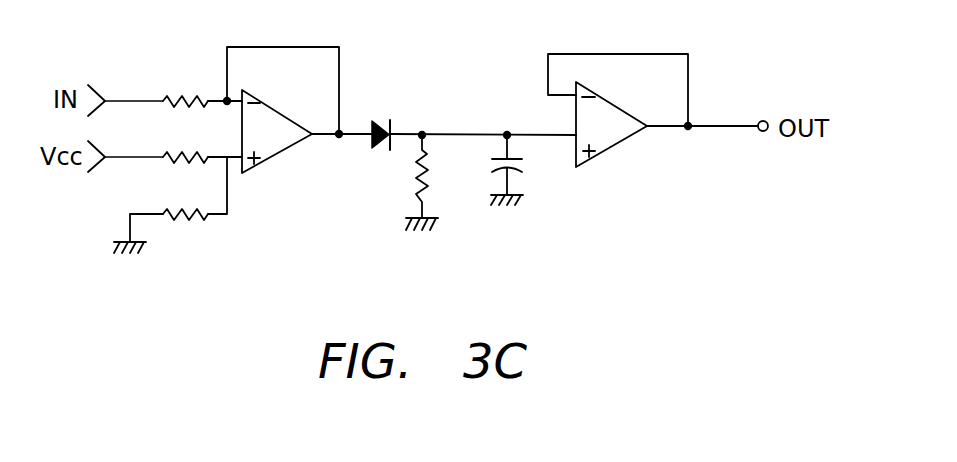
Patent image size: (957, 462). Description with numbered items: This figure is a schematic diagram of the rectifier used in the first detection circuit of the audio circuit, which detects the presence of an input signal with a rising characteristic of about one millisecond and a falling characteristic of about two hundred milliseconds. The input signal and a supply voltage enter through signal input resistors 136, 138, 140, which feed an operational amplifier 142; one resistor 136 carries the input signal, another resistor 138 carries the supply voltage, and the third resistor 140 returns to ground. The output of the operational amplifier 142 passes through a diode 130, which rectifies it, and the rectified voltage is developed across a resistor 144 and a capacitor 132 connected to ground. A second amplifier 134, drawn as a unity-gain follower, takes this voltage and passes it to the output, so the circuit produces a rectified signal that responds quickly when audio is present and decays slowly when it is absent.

The diode 130 is at (385, 120).
The capacitor 132 is at (530, 165).
The buffer amplifier 134 is at (622, 138).
The signal input resistor 136 is at (186, 87).
The signal input resistor 138 is at (186, 144).
The signal input resistor 140 is at (186, 200).
The operational amplifier 142 is at (287, 147).
The resistor 144 is at (447, 176).